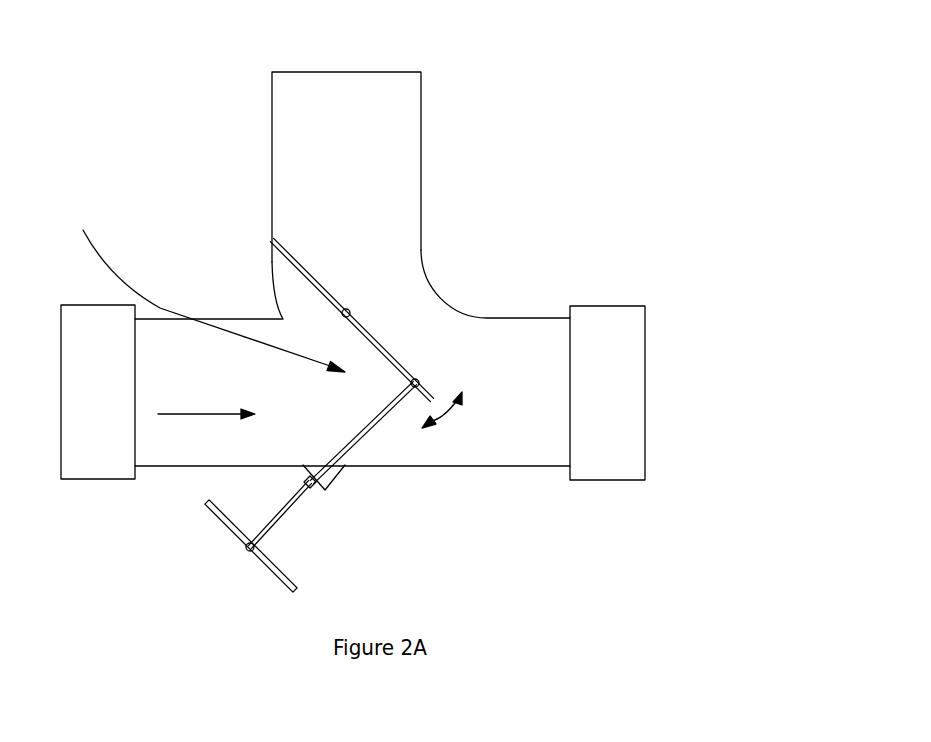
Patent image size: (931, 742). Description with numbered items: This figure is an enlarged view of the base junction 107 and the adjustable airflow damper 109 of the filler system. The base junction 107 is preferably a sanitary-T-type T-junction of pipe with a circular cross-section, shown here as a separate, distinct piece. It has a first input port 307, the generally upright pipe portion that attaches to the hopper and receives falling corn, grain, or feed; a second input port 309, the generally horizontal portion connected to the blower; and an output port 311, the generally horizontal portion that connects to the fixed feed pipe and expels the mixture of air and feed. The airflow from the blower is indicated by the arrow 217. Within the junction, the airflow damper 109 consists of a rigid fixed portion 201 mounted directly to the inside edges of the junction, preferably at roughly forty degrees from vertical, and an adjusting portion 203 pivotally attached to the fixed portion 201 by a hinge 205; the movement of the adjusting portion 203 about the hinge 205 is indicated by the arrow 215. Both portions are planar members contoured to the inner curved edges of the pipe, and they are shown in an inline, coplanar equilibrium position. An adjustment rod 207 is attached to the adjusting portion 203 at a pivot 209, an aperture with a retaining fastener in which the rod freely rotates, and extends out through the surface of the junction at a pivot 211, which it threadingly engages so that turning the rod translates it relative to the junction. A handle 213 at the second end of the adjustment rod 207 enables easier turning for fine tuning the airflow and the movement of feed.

The base junction 107 is at (371, 163).
The first input port 307 is at (366, 211).
The hinge 205 is at (348, 308).
The adjusting portion 203 is at (383, 350).
The pivot 209 is at (417, 380).
The fixed portion 201 is at (302, 275).
The adjustment rod 207 is at (368, 430).
The pivot 211 is at (310, 485).
The handle 213 is at (243, 535).
The arrow 215 is at (447, 413).
The arrow 217 is at (227, 410).
The airflow damper 109 is at (206, 289).
The second input port 309 is at (198, 445).
The output port 311 is at (518, 435).